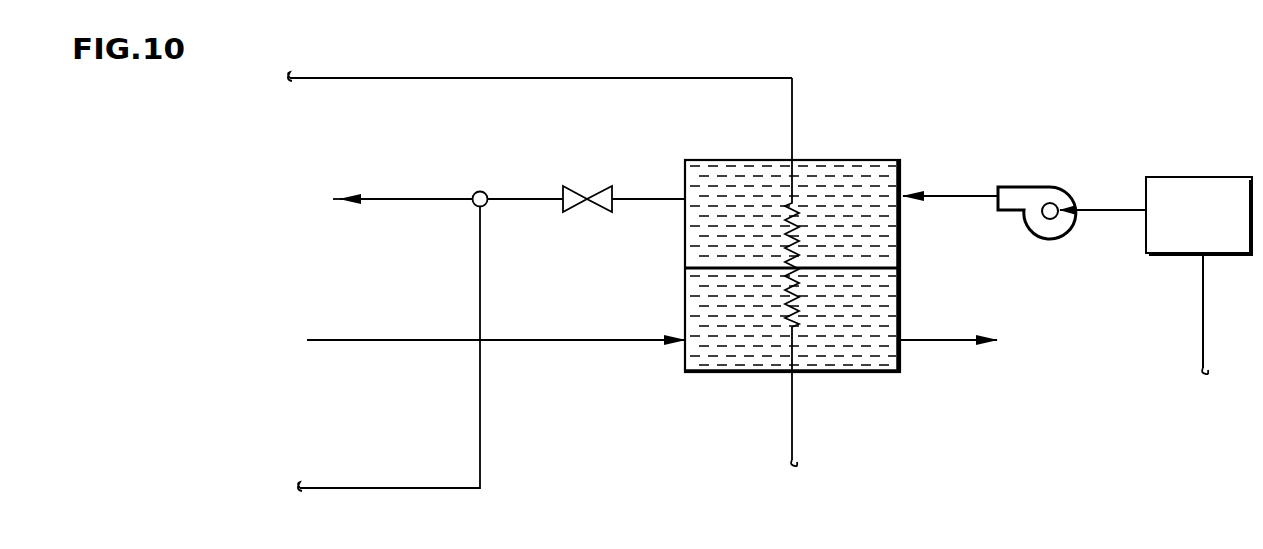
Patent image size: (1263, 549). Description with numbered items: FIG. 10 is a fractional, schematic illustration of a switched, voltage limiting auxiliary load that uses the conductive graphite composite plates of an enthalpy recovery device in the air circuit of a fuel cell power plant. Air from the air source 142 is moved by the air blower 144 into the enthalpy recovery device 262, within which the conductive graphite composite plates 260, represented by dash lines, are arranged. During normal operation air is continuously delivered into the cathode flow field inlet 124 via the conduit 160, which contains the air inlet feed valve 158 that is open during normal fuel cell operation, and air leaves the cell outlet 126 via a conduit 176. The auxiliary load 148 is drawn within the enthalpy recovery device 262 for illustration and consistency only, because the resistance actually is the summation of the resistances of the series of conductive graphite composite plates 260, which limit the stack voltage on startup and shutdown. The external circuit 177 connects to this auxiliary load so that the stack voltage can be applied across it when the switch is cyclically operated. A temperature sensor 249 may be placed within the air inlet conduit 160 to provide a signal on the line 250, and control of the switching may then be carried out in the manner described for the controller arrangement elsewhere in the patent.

The external circuit 177 is at (320, 76).
The cathode flow field inlet 124 is at (334, 197).
The conduit 160 is at (392, 201).
The temperature sensor 249 is at (479, 190).
The air inlet feed valve 158 is at (587, 197).
The enthalpy recovery device 262 is at (830, 156).
The conductive graphite composite plates 260 is at (873, 182).
The auxiliary load 148 is at (800, 230).
The cell outlet 126 is at (307, 338).
The conduit 176 is at (382, 342).
The line 250 is at (336, 486).
The air blower 144 is at (1037, 197).
The air source 142 is at (1203, 177).